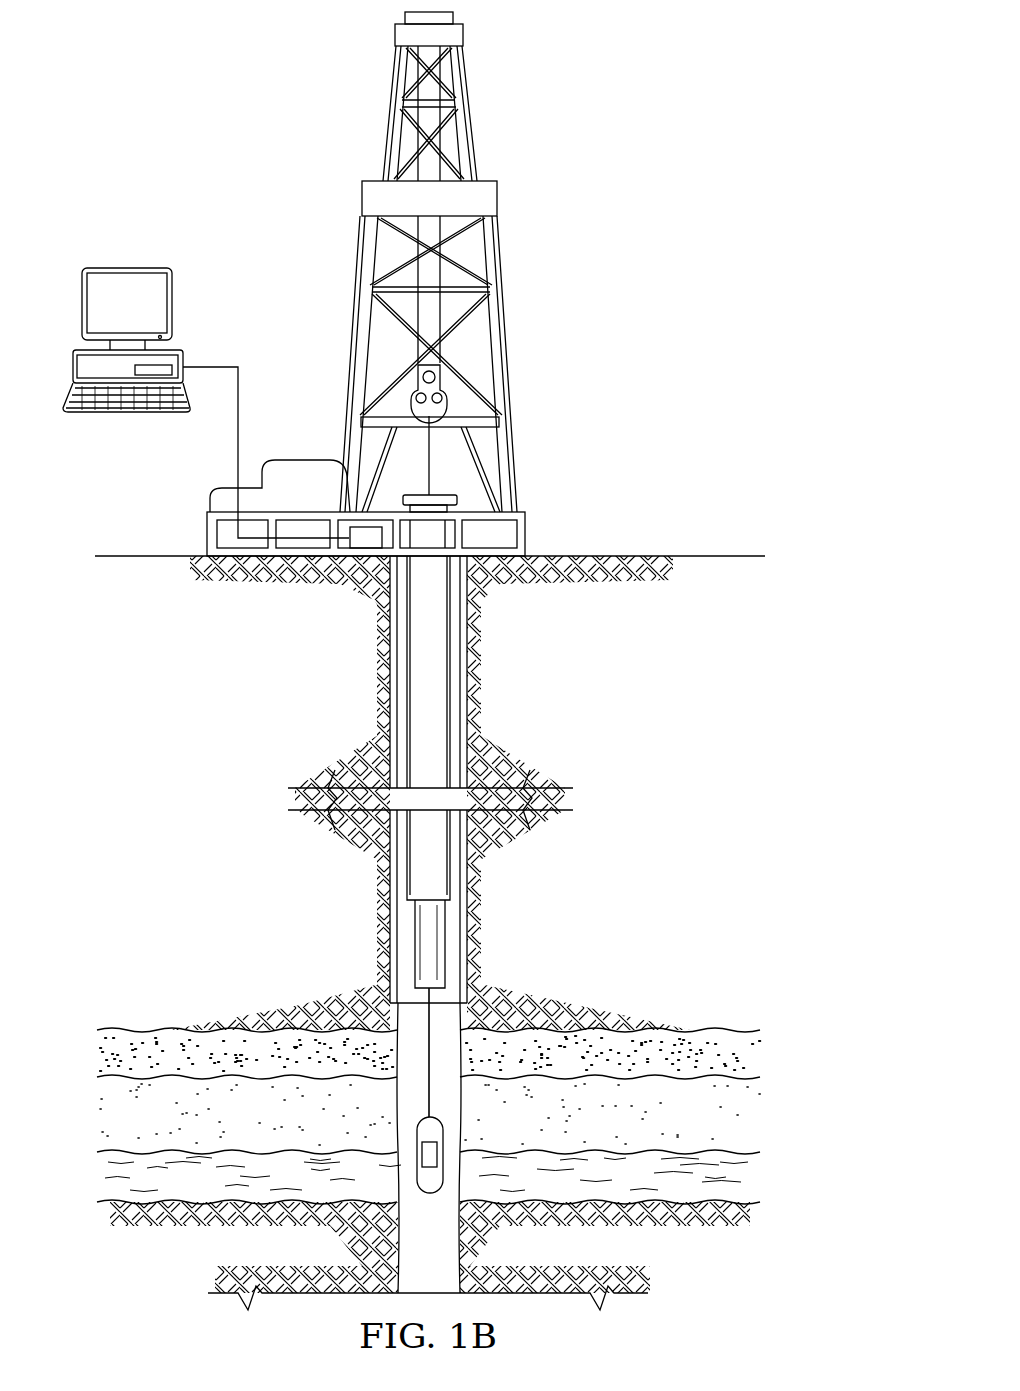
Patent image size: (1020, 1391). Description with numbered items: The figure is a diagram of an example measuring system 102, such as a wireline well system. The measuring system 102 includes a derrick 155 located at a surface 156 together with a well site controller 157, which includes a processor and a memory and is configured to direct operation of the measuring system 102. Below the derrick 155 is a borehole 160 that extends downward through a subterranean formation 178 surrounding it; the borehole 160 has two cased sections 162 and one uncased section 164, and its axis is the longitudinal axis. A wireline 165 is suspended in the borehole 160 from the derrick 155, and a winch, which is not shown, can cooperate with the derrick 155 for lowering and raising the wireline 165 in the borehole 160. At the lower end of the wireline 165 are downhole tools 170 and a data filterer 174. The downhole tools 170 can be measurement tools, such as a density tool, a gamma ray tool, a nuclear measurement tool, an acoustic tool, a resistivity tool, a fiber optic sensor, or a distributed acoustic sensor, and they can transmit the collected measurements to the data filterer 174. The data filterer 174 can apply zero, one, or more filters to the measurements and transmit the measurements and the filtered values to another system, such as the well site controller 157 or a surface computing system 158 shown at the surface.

The measuring system 102 is at (266, 129).
The derrick 155 is at (506, 362).
The surface 156 is at (553, 556).
The well site controller 157 is at (366, 549).
The surface computing system 158 is at (126, 268).
The borehole 160 is at (390, 927).
The cased section 162 is at (452, 852).
The uncased section 164 is at (410, 1243).
The wireline 165 is at (465, 1018).
The downhole tools 170 is at (441, 1117).
The data filterer 174 is at (424, 1153).
The subterranean formation 178 is at (786, 1129).